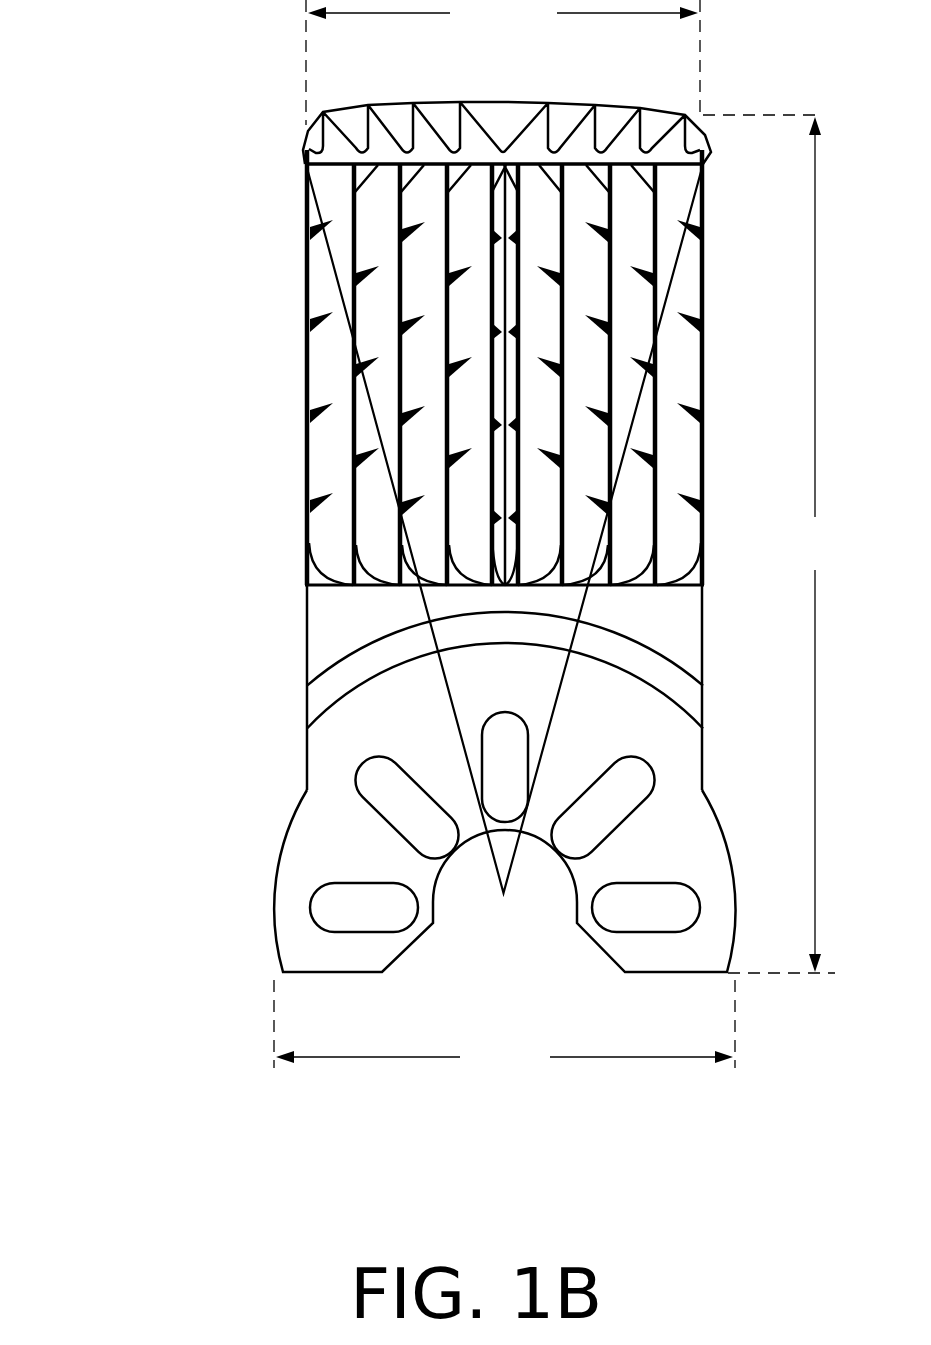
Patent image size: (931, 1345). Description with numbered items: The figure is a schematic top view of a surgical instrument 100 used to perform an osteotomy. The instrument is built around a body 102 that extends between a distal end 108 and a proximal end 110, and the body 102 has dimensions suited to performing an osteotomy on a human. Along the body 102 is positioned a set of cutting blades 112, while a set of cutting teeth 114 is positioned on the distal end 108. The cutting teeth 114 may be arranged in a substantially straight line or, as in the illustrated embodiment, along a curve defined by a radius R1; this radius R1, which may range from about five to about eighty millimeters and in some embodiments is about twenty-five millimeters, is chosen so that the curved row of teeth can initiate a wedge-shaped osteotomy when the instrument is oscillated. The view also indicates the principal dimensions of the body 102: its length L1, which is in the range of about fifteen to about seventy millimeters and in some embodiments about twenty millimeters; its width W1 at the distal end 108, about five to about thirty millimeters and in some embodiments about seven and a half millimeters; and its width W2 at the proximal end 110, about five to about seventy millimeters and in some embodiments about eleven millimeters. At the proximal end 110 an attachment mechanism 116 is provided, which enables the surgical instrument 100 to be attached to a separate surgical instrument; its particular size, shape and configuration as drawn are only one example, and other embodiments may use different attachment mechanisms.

The surgical instrument 100 is at (104, 344).
The body 102 is at (307, 380).
The distal end 108 is at (238, 155).
The proximal end 110 is at (262, 655).
The set of cutting blades 112 is at (395, 355).
The set of cutting teeth 114 is at (296, 133).
The attachment mechanism 116 is at (320, 853).
The radius R1 is at (307, 200).
The width at the distal end W1 is at (503, 62).
The width at the proximal end W2 is at (504, 1027).
The length L1 is at (769, 544).